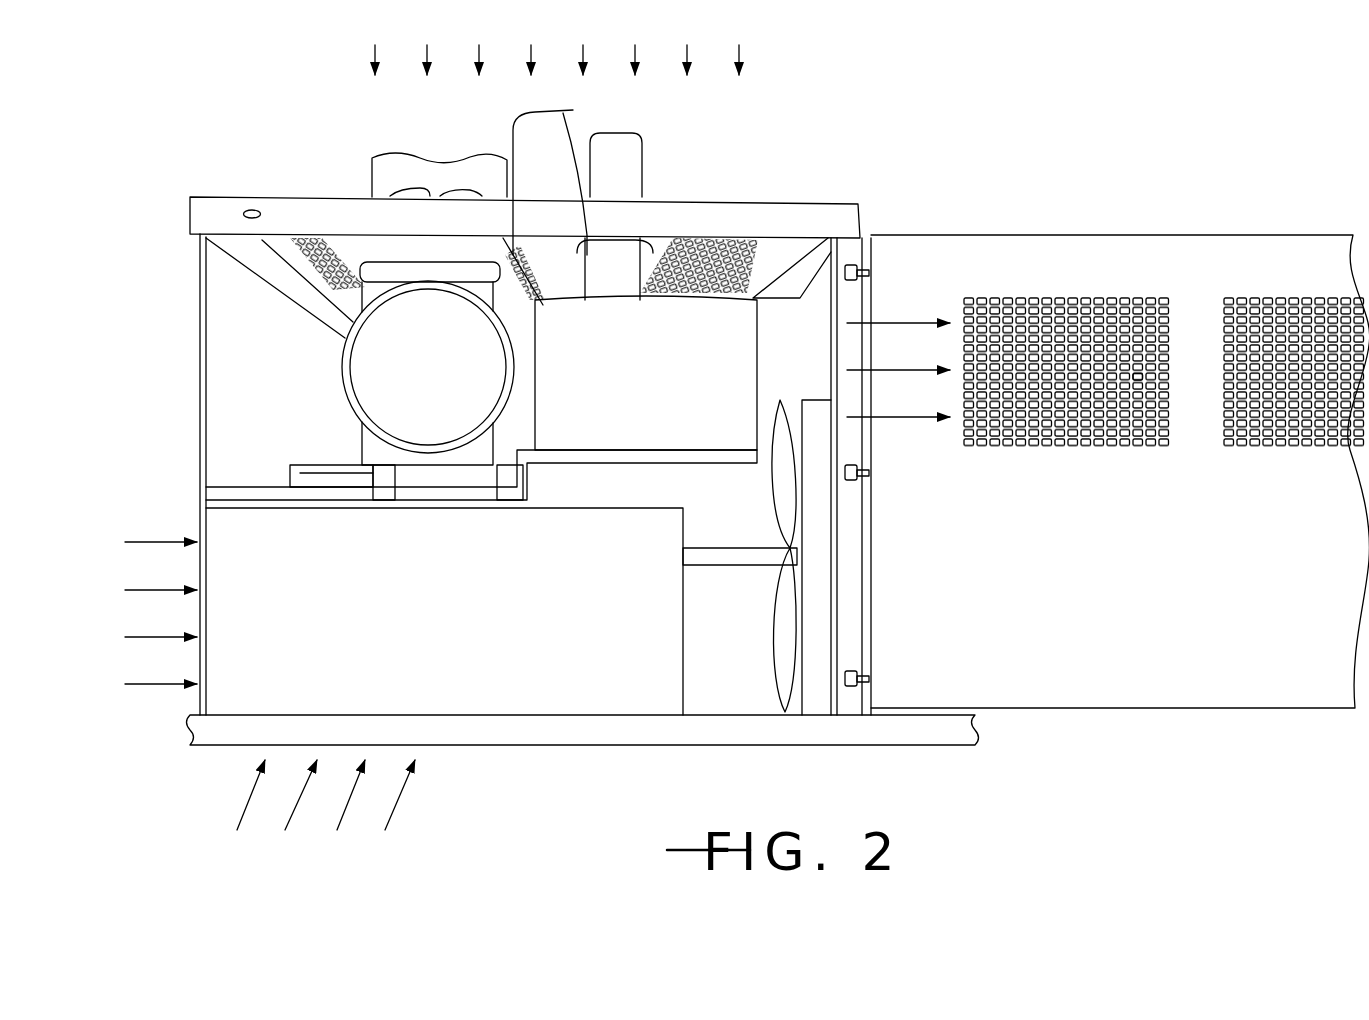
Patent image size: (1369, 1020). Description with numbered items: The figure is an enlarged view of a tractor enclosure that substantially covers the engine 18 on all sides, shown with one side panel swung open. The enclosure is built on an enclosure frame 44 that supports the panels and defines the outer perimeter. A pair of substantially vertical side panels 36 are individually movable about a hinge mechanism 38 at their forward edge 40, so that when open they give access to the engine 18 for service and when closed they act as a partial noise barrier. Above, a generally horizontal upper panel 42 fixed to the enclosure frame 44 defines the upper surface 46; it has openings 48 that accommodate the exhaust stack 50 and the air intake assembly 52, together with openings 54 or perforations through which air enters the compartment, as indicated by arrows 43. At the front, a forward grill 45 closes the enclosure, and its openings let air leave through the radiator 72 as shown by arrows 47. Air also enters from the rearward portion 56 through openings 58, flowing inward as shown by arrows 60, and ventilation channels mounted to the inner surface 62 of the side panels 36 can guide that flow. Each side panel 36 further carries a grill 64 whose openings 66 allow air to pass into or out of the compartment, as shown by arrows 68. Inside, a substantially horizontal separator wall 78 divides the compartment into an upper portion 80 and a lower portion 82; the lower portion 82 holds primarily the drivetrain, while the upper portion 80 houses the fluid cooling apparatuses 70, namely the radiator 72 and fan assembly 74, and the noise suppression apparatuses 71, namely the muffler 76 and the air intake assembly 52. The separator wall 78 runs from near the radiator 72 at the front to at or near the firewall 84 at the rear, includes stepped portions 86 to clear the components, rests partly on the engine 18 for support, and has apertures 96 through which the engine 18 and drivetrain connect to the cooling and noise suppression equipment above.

The engine 18 is at (562, 682).
The side panels 36 is at (942, 230).
The hinge mechanism 38 is at (868, 276).
The forward edge 40 is at (838, 713).
The upper panel 42 is at (765, 240).
The arrows 43 is at (598, 50).
The enclosure frame 44 is at (848, 603).
The forward grill 45 is at (862, 245).
The upper surface 46 is at (730, 195).
The arrows 47 is at (890, 417).
The openings 48 is at (560, 176).
The exhaust stack 50 is at (613, 155).
The air intake assembly 52 is at (440, 165).
The openings 54 is at (700, 243).
The rearward portion 56 is at (170, 560).
The openings 58 is at (168, 511).
The arrows 60 is at (168, 684).
The inner surface 62 is at (918, 725).
The grill 64 is at (1048, 440).
The openings 66 is at (1138, 377).
The arrows 68 is at (340, 810).
The fluid cooling apparatuses 70 is at (818, 478).
The noise suppression apparatuses 71 is at (567, 367).
The radiator 72 is at (820, 553).
The fan assembly 74 is at (787, 692).
The muffler 76 is at (619, 379).
The separator wall 78 is at (262, 490).
The upper portion 80 is at (242, 405).
The lower portion 82 is at (722, 688).
The firewall 84 is at (201, 392).
The stepped portions 86 is at (288, 461).
The apertures 96 is at (457, 483).